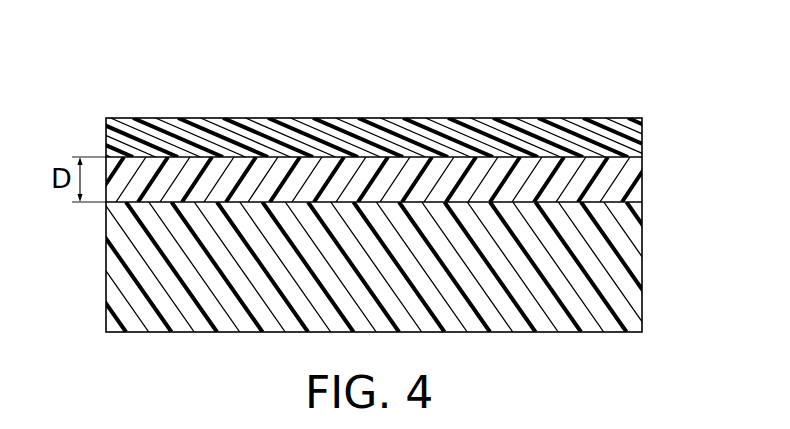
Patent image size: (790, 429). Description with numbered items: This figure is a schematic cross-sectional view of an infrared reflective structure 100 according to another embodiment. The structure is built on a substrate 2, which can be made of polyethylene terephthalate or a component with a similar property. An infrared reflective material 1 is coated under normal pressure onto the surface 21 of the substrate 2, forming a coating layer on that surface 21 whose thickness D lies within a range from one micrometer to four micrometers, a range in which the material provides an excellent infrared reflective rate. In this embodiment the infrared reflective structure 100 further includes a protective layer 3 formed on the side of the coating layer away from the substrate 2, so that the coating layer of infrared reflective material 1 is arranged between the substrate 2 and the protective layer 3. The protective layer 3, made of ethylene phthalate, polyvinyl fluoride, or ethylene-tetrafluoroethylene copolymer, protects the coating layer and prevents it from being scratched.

The infrared reflective structure 100 is at (104, 29).
The protective layer 3 is at (618, 134).
The infrared reflective material 1 is at (620, 171).
The surface of the substrate 21 is at (606, 198).
The substrate 2 is at (618, 273).